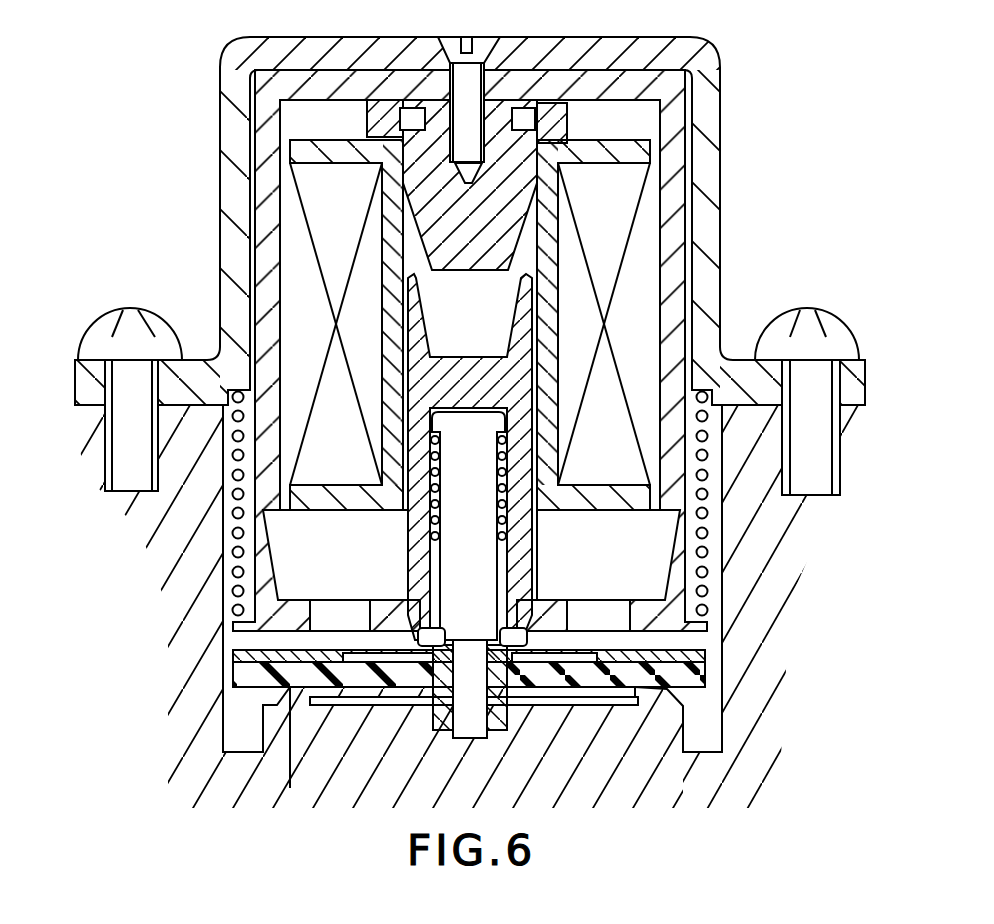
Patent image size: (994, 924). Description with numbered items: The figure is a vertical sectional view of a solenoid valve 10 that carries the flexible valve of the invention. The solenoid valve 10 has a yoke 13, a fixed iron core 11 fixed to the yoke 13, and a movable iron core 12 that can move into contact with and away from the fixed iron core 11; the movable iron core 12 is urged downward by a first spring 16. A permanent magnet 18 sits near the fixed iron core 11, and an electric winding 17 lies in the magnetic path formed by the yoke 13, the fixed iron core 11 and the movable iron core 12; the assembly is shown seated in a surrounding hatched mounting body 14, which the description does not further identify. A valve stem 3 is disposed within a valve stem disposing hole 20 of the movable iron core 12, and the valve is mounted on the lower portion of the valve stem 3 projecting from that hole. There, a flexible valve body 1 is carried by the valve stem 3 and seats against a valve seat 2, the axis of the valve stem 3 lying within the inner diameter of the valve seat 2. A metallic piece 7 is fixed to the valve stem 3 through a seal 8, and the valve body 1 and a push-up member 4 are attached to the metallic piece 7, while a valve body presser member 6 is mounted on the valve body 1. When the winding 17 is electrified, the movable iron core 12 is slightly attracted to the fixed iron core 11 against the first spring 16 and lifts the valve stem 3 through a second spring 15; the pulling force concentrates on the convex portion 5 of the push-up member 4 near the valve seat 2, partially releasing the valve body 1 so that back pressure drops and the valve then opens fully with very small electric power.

The valve body 1 is at (568, 686).
The valve seat 2 is at (660, 740).
The valve stem 3 is at (470, 738).
The push-up member 4 is at (592, 705).
The convex portion 5 is at (633, 697).
The valve body presser member 6 is at (643, 657).
The metallic piece 7 is at (522, 642).
The seal 8 is at (487, 647).
The solenoid valve 10 is at (738, 114).
The fixed iron core 11 is at (462, 267).
The movable iron core 12 is at (423, 342).
The yoke 13 is at (677, 310).
The mounting body 14 is at (680, 593).
The second spring 15 is at (502, 490).
The first spring 16 is at (708, 545).
The electric winding 17 is at (627, 213).
The permanent magnet 18 is at (567, 117).
The valve stem disposing hole 20 is at (437, 452).